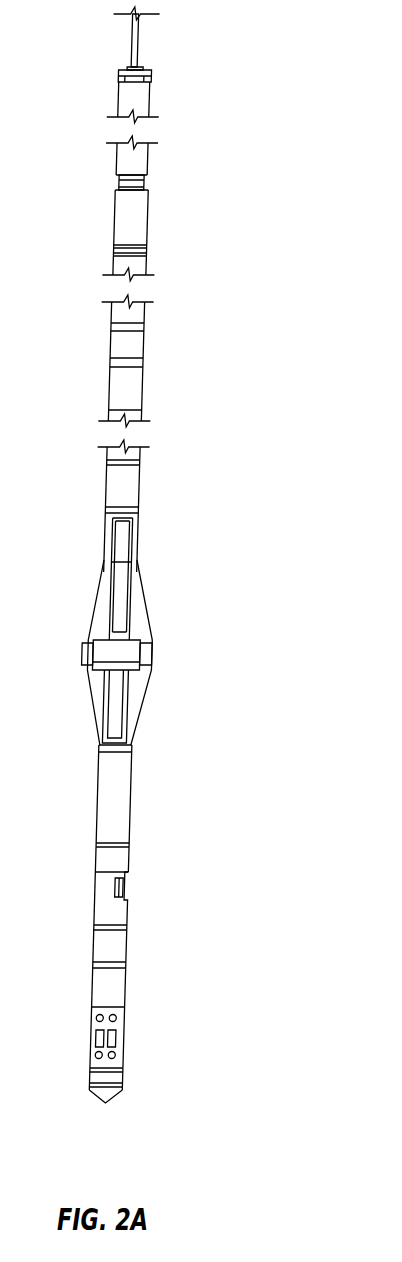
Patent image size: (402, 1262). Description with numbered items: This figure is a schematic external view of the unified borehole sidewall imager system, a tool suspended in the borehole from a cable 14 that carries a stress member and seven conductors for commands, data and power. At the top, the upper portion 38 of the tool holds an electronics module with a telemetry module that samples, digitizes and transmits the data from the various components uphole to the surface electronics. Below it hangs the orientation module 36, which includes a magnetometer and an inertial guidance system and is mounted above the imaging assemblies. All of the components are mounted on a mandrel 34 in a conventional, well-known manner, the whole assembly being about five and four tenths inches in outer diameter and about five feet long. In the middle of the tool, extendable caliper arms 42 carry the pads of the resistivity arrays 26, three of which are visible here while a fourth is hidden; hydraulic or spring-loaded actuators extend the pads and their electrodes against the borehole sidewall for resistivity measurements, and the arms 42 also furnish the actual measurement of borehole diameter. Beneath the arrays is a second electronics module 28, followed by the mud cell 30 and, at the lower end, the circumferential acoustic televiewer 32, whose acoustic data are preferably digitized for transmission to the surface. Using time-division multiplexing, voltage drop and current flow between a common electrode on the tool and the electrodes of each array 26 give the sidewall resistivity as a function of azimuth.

The cable 14 is at (171, 38).
The upper portion 38 is at (169, 95).
The orientation module 36 is at (164, 208).
The mandrel 34 is at (153, 540).
The extendable caliper arms 42 is at (122, 652).
The resistivity arrays 26 is at (119, 666).
The electronics module 28 is at (150, 771).
The mud cell 30 is at (160, 877).
The circumferential acoustic televiewer 32 is at (145, 1046).